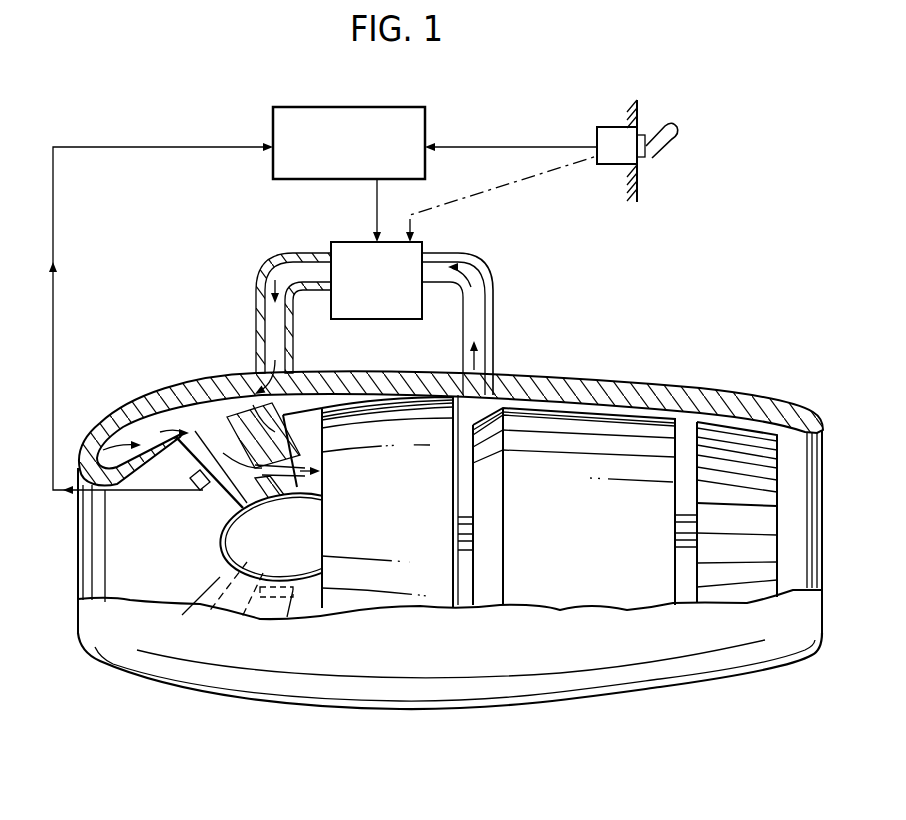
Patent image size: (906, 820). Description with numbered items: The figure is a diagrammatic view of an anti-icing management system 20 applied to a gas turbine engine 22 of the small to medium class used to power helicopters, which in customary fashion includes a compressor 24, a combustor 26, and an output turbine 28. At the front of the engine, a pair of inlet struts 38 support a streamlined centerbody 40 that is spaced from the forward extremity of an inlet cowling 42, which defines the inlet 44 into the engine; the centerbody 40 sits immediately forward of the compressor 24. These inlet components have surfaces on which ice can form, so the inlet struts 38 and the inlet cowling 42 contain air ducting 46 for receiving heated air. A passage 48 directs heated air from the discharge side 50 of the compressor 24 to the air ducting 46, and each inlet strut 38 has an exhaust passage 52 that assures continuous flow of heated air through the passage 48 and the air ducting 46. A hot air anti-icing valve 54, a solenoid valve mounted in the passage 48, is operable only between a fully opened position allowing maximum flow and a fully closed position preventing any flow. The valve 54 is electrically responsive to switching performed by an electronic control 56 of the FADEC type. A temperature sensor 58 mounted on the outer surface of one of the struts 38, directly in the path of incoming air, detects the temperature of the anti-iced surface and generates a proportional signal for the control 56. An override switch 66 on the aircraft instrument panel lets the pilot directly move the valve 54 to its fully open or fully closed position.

The anti-icing management system 20 is at (303, 733).
The gas turbine engine 22 is at (180, 673).
The compressor 24 is at (393, 552).
The combustor 26 is at (591, 549).
The output turbine 28 is at (748, 534).
The inlet struts 38 is at (217, 577).
The centerbody 40 is at (296, 552).
The inlet cowling 42 is at (147, 393).
The inlet 44 is at (75, 586).
The air ducting 46 is at (232, 440).
The passage 48 is at (495, 295).
The discharge side 50 is at (457, 467).
The exhaust passage 52 is at (270, 460).
The hot air anti-icing valve 54 is at (366, 322).
The electronic control 56 is at (272, 168).
The temperature sensor 58 is at (207, 492).
The override switch 66 is at (673, 130).